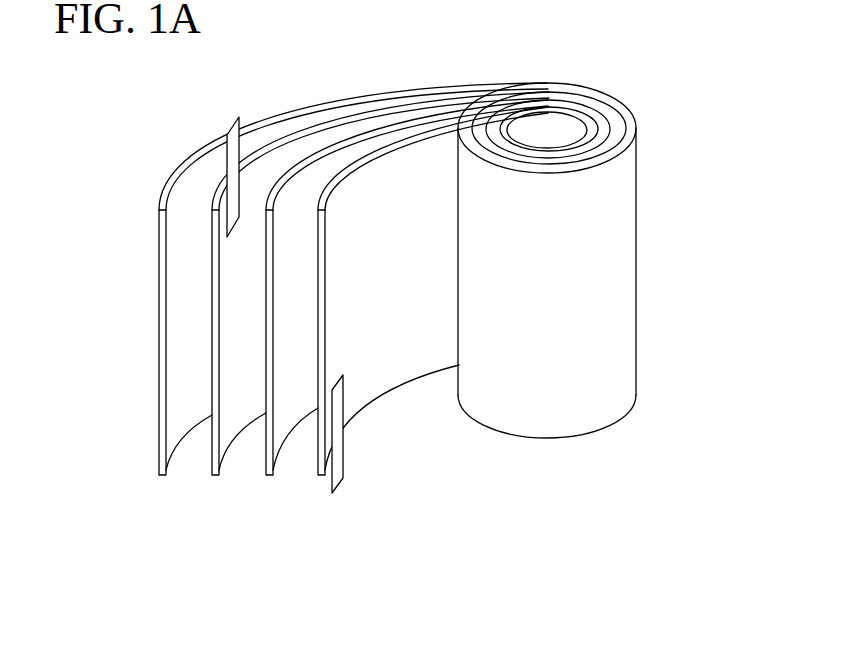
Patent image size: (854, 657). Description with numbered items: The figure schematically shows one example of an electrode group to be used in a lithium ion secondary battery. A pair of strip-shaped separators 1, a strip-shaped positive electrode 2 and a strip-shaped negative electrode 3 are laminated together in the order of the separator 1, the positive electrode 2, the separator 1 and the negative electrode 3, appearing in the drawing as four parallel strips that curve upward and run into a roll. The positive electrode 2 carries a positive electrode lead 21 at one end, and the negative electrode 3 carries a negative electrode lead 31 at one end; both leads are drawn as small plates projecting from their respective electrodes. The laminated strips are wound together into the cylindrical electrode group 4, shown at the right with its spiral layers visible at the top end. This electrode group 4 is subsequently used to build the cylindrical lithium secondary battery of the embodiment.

The separator 1 is at (173, 432).
The positive electrode 2 is at (263, 170).
The positive electrode lead 21 is at (233, 129).
The negative electrode 3 is at (380, 373).
The negative electrode lead 31 is at (338, 460).
The electrode group 4 is at (684, 92).